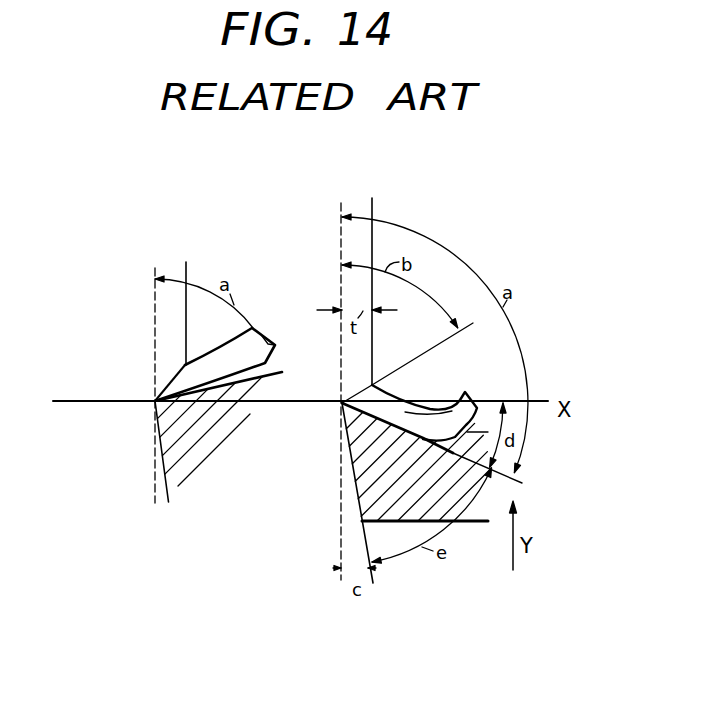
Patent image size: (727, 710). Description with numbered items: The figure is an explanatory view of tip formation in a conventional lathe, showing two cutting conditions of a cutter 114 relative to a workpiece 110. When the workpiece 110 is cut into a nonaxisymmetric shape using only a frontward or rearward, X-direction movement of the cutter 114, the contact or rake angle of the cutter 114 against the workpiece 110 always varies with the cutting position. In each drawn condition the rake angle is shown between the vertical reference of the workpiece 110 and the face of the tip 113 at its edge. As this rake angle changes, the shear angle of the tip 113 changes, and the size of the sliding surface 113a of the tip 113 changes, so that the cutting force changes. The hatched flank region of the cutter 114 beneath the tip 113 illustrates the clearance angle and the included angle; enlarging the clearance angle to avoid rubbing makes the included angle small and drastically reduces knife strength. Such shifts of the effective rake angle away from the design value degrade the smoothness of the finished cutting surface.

The workpiece 110 is at (187, 270).
The tip 113 is at (260, 345).
The sliding surface 113a is at (158, 392).
The cutter 114 is at (175, 455).